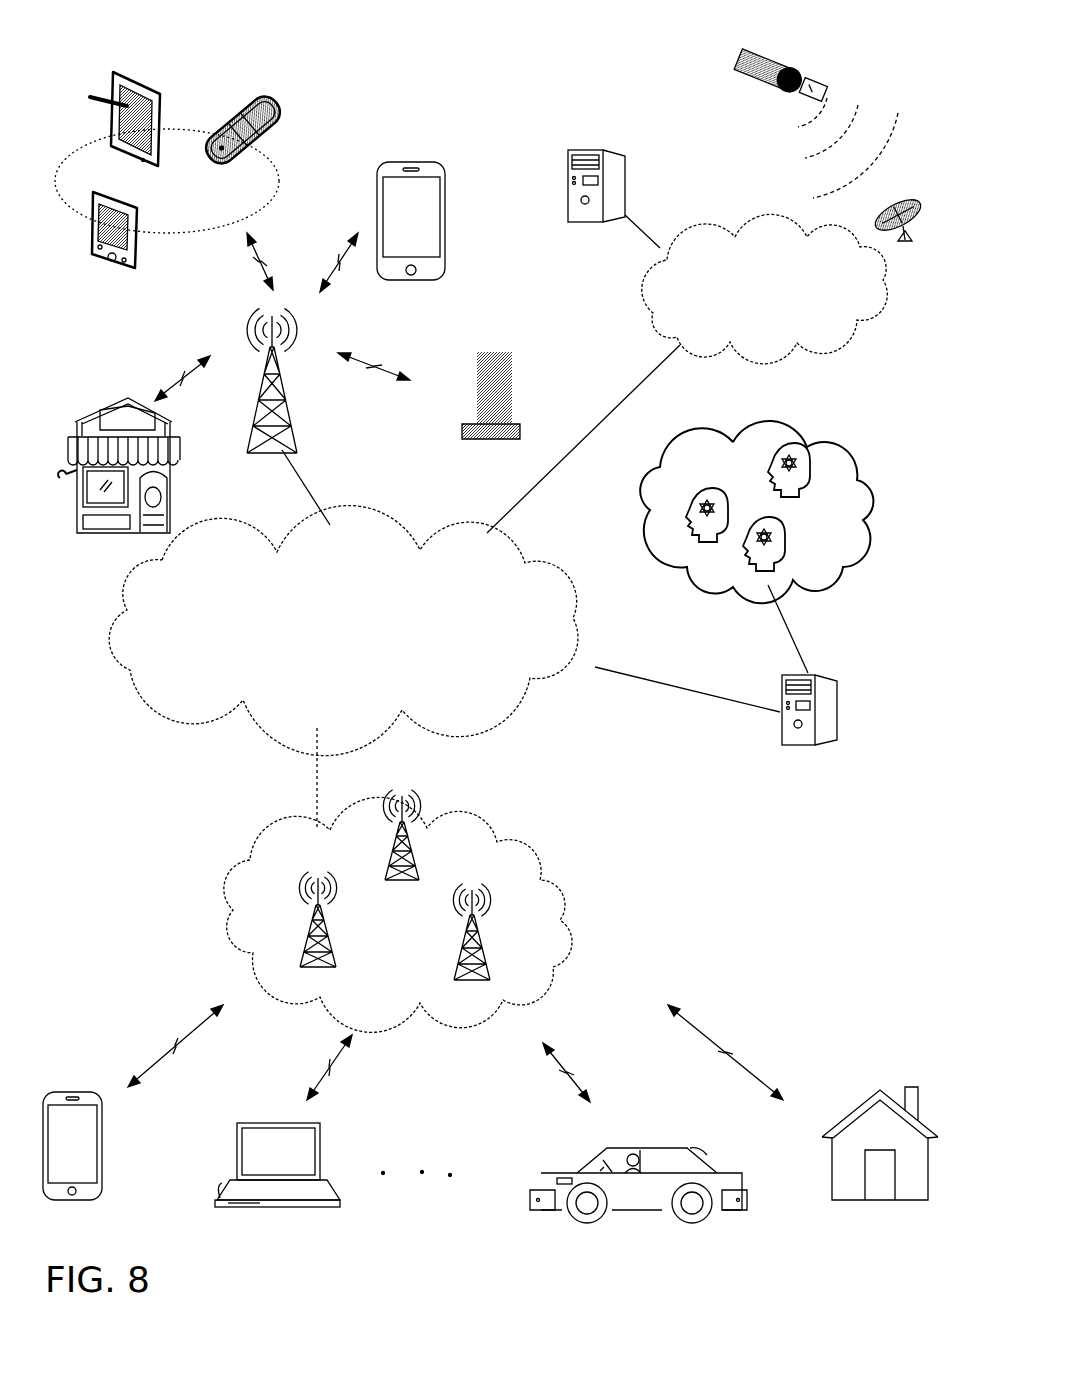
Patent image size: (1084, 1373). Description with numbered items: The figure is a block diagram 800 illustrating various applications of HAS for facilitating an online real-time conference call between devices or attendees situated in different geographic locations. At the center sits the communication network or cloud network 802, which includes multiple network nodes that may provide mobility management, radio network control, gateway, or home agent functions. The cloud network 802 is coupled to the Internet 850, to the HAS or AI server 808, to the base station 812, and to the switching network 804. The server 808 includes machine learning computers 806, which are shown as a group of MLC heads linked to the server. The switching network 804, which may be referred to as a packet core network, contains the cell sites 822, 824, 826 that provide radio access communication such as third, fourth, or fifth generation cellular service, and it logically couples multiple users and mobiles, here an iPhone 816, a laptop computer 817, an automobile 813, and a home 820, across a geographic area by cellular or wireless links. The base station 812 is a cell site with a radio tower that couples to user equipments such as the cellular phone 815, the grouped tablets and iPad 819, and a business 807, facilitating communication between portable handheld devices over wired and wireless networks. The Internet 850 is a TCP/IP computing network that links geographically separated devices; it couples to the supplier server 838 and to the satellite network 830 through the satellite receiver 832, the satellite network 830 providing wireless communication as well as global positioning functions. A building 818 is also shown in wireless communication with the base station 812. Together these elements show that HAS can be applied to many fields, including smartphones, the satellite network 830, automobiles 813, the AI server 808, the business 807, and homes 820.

The diagram 800 is at (198, 42).
The communication network 802 is at (343, 631).
The switching network 804 is at (540, 862).
The machine learning computers 806 is at (746, 532).
The business 807 is at (120, 395).
The HAS server 808 is at (780, 727).
The base station 812 is at (296, 425).
The automobile 813 is at (638, 1185).
The cellular phone 815 is at (411, 221).
The iPhone 816 is at (72, 1146).
The laptop computer 817 is at (277, 1165).
The building 818 is at (476, 356).
The tablets and/or iPad 819 is at (262, 205).
The home 820 is at (880, 1143).
The cell site 822 is at (425, 873).
The cell site 824 is at (312, 967).
The cell site 826 is at (505, 975).
The satellite network 830 is at (737, 72).
The satellite receiver 832 is at (893, 237).
The supplier server 838 is at (568, 192).
The Internet 850 is at (765, 288).